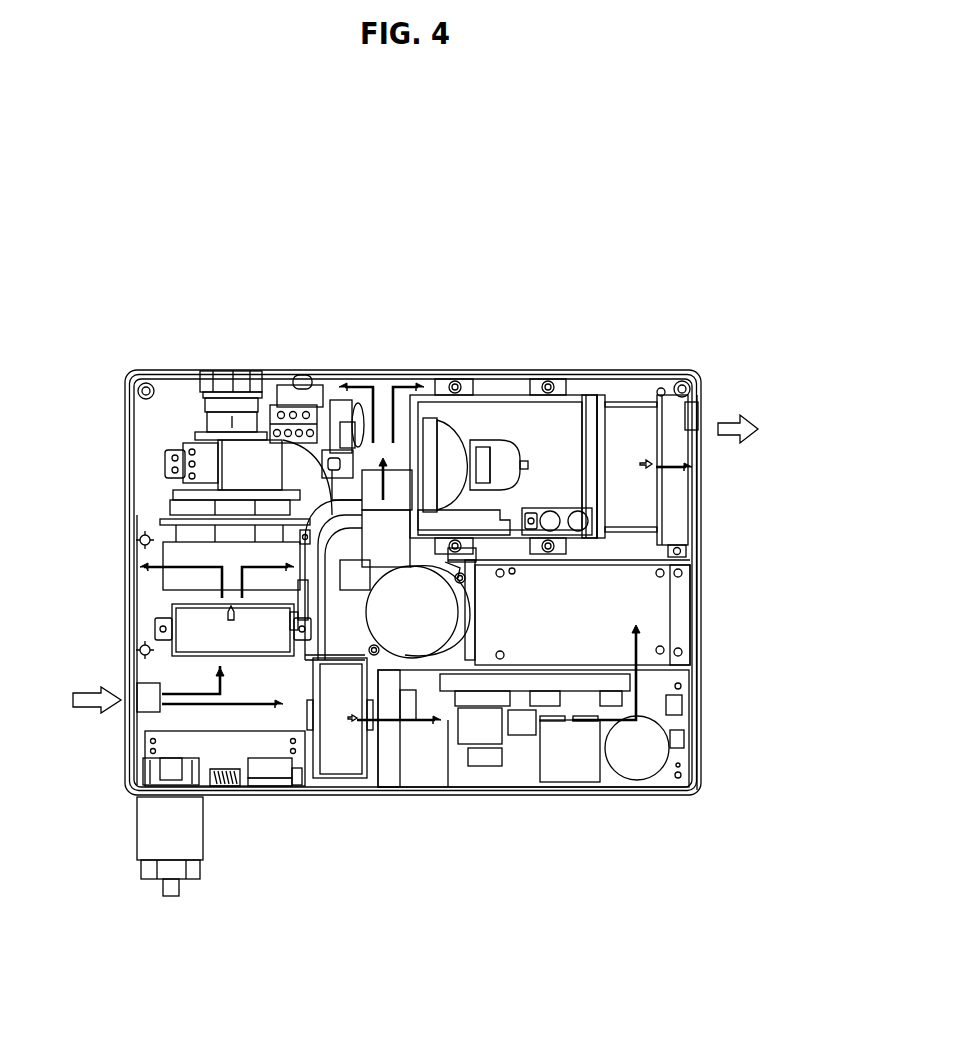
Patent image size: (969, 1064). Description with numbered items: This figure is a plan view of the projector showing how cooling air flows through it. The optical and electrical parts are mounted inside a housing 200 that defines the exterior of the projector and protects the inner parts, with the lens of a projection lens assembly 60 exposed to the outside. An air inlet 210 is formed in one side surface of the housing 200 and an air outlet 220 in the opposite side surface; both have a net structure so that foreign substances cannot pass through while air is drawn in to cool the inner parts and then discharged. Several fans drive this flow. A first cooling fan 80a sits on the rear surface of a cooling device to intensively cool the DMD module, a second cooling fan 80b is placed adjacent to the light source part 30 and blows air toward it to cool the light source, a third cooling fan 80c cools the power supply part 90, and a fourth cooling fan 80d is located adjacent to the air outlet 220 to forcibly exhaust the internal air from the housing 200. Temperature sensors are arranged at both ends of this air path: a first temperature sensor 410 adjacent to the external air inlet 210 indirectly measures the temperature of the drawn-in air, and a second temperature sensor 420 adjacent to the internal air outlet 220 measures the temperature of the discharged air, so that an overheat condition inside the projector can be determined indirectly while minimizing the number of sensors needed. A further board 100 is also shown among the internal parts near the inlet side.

The light source part 30 is at (450, 440).
The projection lens assembly 60 is at (222, 370).
The first cooling fan 80a is at (200, 618).
The second cooling fan 80b is at (415, 628).
The third cooling fan 80c is at (345, 745).
The fourth cooling fan 80d is at (633, 493).
The power supply part 90 is at (525, 765).
The control board 100 is at (190, 558).
The housing 200 is at (722, 601).
The air inlet 210 is at (112, 762).
The air outlet 220 is at (712, 402).
The first temperature sensor 410 is at (148, 694).
The second temperature sensor 420 is at (690, 402).